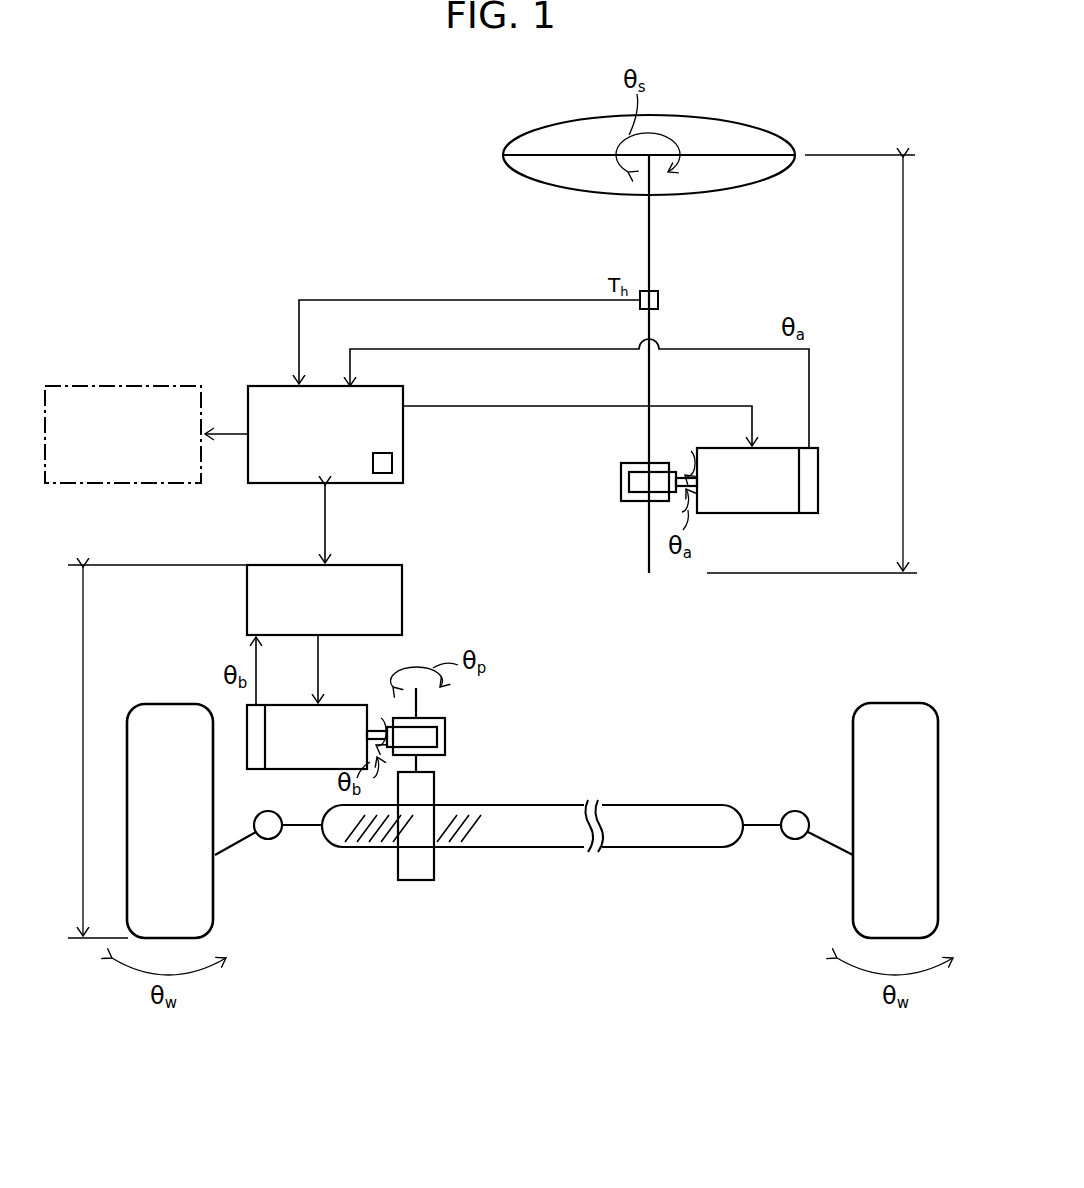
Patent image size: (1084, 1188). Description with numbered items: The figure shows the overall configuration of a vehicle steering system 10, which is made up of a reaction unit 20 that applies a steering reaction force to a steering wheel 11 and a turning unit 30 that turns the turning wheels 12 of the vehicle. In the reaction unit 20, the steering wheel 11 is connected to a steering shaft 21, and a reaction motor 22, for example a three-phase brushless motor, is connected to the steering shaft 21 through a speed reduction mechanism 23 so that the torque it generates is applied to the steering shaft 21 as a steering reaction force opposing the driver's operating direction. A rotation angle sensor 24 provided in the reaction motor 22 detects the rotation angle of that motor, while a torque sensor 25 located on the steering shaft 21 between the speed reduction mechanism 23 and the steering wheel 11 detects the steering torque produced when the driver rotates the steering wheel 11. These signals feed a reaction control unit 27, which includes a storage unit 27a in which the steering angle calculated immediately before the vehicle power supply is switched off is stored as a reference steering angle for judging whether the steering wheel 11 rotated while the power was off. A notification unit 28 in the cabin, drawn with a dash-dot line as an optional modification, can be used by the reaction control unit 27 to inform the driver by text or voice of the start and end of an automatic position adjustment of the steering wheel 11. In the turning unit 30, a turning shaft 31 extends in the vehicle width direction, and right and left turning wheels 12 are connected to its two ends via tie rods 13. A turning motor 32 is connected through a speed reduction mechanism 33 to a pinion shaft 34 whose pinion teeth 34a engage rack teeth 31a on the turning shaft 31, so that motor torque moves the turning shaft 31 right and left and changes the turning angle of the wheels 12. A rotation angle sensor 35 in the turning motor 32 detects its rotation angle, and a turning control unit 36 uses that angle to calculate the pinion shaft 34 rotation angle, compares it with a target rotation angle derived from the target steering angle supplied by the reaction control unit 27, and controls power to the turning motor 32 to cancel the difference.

The steering system 10 is at (816, 120).
The steering wheel 11 is at (737, 118).
The turning wheels 12 is at (214, 904).
The tie rods 13 is at (300, 834).
The reaction unit 20 is at (905, 395).
The steering shaft 21 is at (654, 222).
The reaction motor 22 is at (780, 515).
The speed reduction mechanism 23 is at (616, 477).
The rotation angle sensor 24 is at (808, 515).
The torque sensor 25 is at (659, 300).
The reaction control unit 27 is at (382, 386).
The storage unit 27a is at (393, 463).
The notification unit 28 is at (130, 386).
The turning unit 30 is at (82, 752).
The turning shaft 31 is at (536, 848).
The rack teeth 31a is at (452, 848).
The turning motor 32 is at (350, 704).
The speed reduction mechanism 33 is at (447, 749).
The pinion shaft 34 is at (420, 703).
The pinion teeth 34a is at (416, 884).
The rotation angle sensor 35 is at (245, 752).
The turning control unit 36 is at (247, 602).